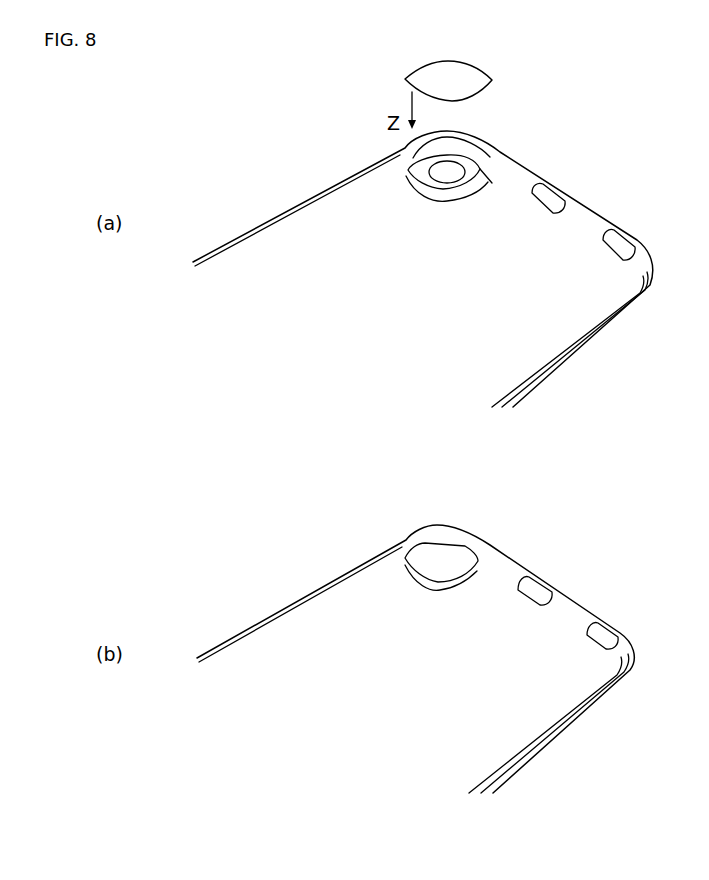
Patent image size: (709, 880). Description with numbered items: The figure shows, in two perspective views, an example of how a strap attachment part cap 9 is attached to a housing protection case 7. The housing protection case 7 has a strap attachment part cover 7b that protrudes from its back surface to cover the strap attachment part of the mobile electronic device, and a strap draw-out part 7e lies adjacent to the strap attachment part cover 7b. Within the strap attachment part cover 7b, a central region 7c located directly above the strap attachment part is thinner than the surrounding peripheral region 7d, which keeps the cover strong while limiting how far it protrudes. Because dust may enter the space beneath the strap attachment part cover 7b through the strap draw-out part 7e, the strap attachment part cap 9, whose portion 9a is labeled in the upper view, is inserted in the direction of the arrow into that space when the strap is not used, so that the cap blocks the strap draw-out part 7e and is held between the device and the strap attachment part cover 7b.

The housing protection case 7 is at (580, 213).
The strap attachment part cover 7b is at (541, 68).
The central region 7c is at (448, 172).
The peripheral region 7d is at (465, 160).
The strap draw-out part 7e is at (428, 158).
The strap attachment part cap 9 is at (425, 73).
The edge portion 9a is at (455, 62).